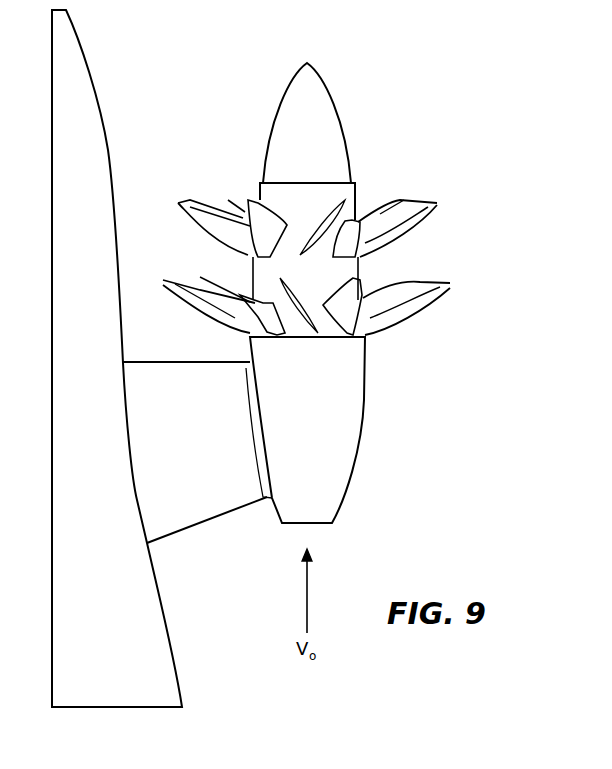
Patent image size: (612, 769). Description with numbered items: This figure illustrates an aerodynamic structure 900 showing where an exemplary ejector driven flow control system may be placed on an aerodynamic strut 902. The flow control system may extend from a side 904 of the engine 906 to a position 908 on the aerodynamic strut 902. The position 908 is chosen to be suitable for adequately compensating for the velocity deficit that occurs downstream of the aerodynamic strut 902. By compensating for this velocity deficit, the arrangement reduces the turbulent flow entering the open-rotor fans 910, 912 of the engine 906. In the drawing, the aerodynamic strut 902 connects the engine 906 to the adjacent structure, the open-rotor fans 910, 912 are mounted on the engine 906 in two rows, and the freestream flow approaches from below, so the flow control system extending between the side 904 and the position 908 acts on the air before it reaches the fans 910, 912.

The aerodynamic structure 900 is at (428, 41).
The aerodynamic strut 902 is at (197, 508).
The side of the engine 904 is at (250, 362).
The engine 906 is at (333, 152).
The position on the aerodynamic strut 908 is at (161, 362).
The open-rotor fan 910 is at (215, 212).
The open-rotor fan 912 is at (187, 282).